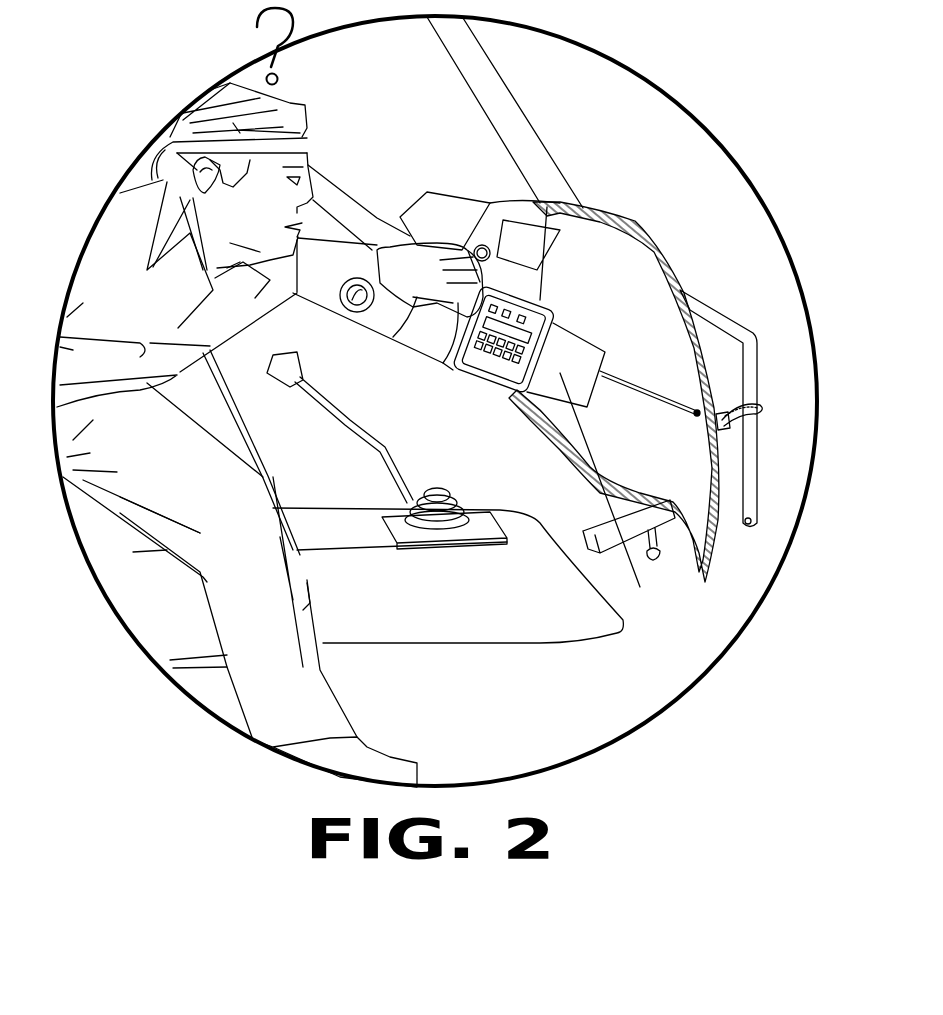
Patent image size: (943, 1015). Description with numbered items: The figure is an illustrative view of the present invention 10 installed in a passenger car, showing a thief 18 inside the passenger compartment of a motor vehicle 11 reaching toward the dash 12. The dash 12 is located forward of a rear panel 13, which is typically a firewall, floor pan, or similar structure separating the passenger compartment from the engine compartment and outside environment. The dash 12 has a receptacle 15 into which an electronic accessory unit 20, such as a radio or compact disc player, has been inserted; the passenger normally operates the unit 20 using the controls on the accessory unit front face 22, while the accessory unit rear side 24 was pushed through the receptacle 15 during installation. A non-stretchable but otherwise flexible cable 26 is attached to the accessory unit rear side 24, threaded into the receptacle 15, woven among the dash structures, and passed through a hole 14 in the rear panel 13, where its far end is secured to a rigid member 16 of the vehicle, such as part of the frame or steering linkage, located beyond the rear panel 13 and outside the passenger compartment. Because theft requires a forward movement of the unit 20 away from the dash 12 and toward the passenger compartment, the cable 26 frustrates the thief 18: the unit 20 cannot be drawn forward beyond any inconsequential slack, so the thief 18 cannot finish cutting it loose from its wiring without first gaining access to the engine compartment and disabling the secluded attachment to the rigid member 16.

The present invention 10 is at (685, 365).
The motor vehicle 11 is at (437, 148).
The dash 12 is at (553, 217).
The rear panel 13 is at (720, 460).
The hole 14 is at (700, 418).
The receptacle 15 is at (465, 360).
The rigid member 16 is at (750, 357).
The thief 18 is at (133, 260).
The accessory unit 20 is at (611, 496).
The accessory unit front face 22 is at (508, 370).
The accessory unit rear side 24 is at (600, 368).
The cable 26 is at (670, 403).